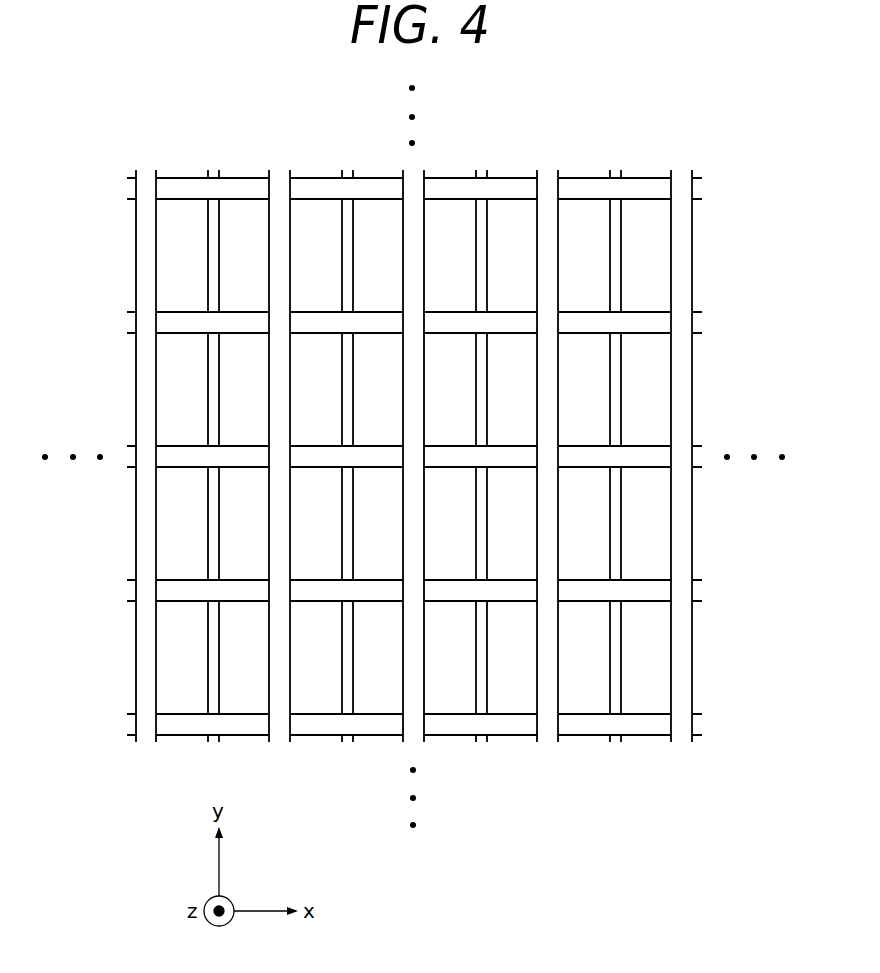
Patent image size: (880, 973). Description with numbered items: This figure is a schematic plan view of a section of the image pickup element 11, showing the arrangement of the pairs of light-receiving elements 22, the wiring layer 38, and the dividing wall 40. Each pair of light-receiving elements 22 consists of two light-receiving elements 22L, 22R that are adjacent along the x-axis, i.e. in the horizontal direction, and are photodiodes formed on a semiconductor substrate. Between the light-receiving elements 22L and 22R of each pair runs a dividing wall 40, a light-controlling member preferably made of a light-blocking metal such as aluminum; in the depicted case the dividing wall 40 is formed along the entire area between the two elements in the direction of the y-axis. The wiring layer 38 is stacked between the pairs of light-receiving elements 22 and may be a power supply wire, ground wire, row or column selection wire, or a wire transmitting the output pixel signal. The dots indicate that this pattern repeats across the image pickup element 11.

The image pickup element 11 is at (595, 118).
The pair of light-receiving elements 22 is at (172, 382).
The light-receiving element 22R is at (180, 233).
The light-receiving element 22L is at (241, 234).
The wiring layer 38 is at (630, 322).
The dividing wall 40 is at (478, 255).